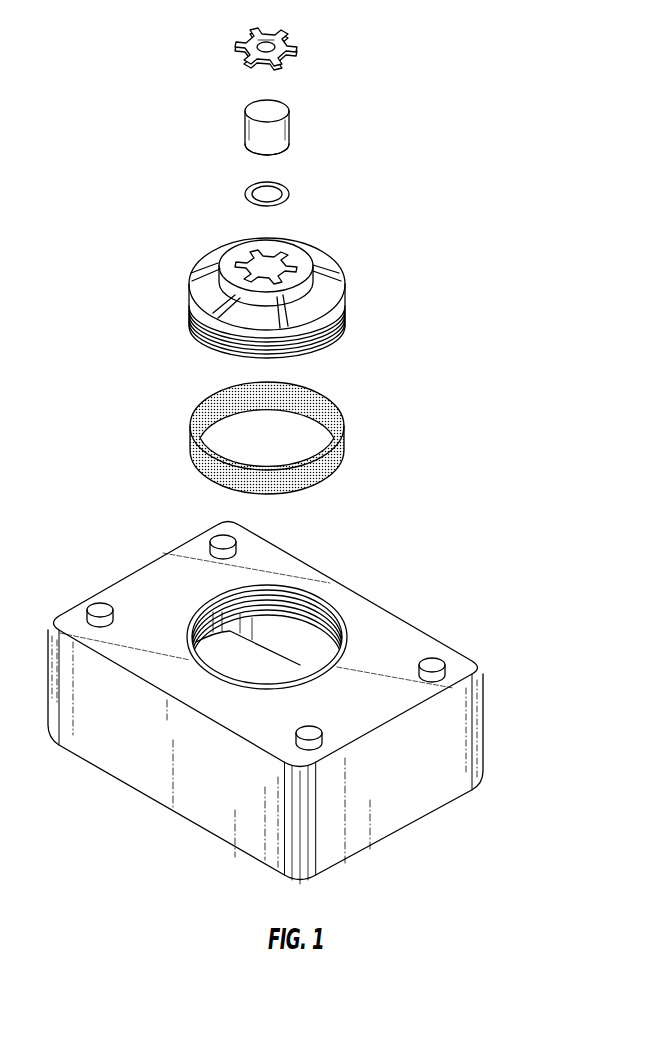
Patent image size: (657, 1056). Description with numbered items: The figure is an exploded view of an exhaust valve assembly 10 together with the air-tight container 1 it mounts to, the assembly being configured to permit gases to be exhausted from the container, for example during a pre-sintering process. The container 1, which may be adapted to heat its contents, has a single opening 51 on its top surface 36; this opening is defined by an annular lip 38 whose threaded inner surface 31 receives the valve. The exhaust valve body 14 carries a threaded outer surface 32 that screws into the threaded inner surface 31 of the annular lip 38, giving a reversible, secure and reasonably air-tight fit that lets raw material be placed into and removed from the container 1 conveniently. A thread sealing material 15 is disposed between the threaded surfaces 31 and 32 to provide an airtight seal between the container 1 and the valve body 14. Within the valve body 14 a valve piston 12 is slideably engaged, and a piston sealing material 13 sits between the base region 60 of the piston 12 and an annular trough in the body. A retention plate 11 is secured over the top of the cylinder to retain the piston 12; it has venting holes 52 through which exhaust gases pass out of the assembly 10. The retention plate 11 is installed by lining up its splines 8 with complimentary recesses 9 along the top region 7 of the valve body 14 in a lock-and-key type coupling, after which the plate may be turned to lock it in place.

The air-tight container 1 is at (301, 697).
The top region 7 is at (288, 250).
The splines 8 is at (290, 44).
The recesses 9 is at (346, 319).
The exhaust valve assembly 10 is at (390, 490).
The retention plate 11 is at (283, 41).
The valve piston 12 is at (272, 108).
The piston sealing material 13 is at (283, 187).
The exhaust valve body 14 is at (260, 281).
The thread sealing material 15 is at (322, 392).
The threaded inner surface 31 is at (241, 664).
The threaded outer surface 32 is at (192, 313).
The top surface 36 is at (407, 638).
The annular lip 38 is at (243, 680).
The opening 51 is at (308, 640).
The venting holes 52 is at (266, 44).
The base region 60 is at (278, 152).